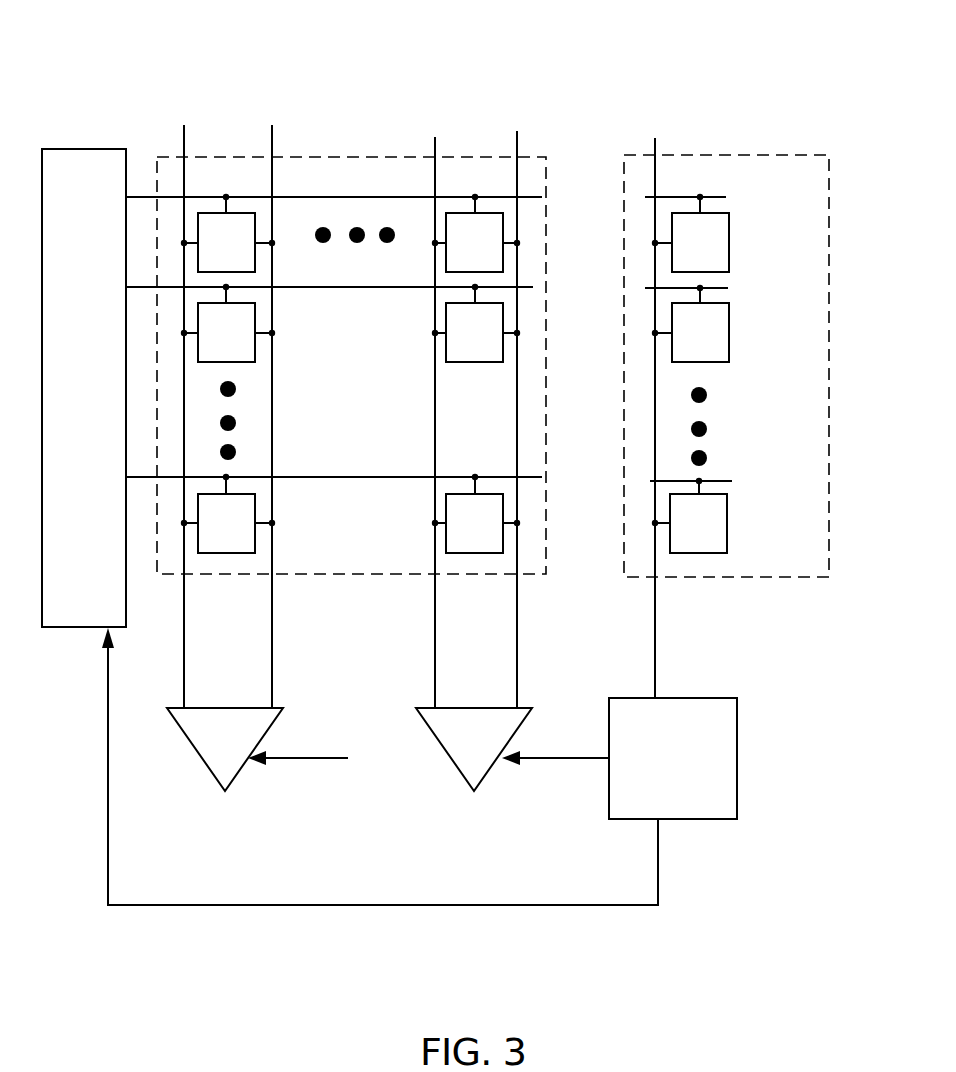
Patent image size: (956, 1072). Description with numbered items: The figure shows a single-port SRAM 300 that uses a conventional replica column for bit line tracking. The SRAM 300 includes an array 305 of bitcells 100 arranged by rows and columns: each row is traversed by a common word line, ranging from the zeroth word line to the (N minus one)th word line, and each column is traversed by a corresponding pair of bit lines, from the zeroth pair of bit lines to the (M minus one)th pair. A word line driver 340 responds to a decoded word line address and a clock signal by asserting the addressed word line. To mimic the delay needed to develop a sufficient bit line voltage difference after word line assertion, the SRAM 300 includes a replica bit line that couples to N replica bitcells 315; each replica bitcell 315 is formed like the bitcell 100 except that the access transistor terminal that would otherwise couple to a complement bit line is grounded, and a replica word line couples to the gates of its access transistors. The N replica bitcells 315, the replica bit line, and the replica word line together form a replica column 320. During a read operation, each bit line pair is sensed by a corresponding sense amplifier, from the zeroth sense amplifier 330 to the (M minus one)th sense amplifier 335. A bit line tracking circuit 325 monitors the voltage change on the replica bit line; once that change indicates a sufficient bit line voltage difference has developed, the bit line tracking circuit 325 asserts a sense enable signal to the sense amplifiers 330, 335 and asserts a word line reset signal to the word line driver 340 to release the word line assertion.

The SRAM 300 is at (128, 73).
The bitcell 100 is at (254, 245).
The array 305 is at (351, 398).
The replica bitcell 315 is at (729, 243).
The replica column 320 is at (726, 397).
The bit line tracking circuit 325 is at (704, 821).
The zeroth sense amplifier 330 is at (201, 765).
The (M−1)th sense amplifier 335 is at (453, 767).
The word line driver 340 is at (71, 630).